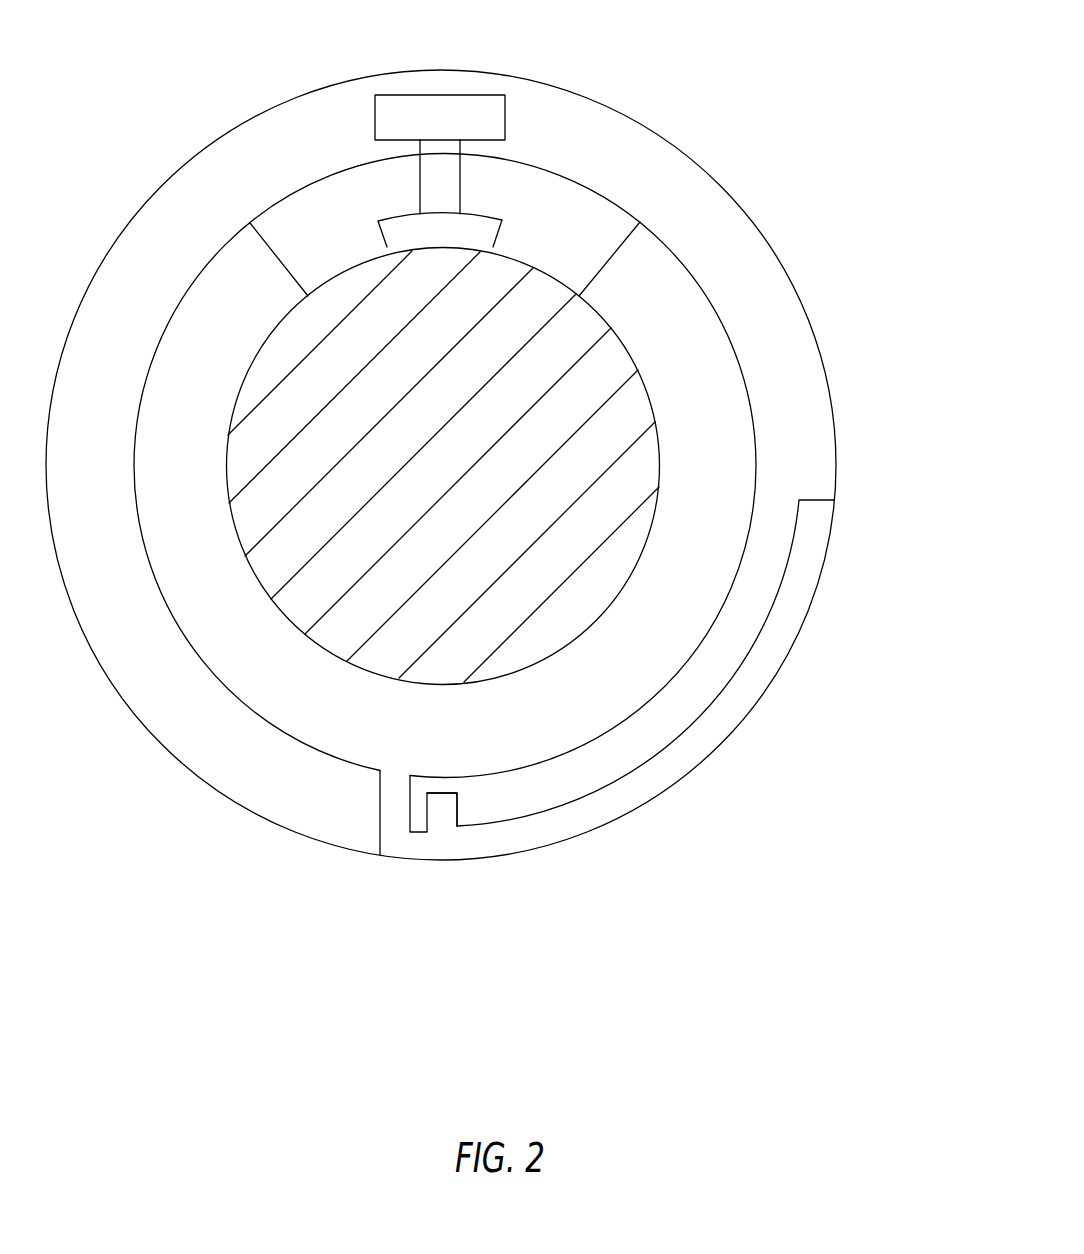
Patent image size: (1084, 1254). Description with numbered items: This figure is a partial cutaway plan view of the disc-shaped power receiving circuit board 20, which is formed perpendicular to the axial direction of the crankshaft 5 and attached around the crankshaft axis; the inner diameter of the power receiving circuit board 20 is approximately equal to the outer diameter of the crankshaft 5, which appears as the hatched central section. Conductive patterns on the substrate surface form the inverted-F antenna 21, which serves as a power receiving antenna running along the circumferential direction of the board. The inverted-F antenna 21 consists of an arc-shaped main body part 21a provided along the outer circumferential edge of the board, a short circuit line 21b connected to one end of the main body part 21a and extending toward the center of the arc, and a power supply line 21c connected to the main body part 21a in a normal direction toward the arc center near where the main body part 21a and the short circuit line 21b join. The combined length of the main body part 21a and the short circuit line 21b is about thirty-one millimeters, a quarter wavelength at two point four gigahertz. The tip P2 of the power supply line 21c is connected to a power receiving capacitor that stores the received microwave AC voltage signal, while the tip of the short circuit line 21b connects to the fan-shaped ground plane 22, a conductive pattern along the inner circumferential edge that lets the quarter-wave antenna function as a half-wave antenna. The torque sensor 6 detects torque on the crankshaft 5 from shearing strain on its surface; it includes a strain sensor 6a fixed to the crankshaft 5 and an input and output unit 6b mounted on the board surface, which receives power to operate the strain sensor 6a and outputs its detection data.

The power receiving circuit board 20 is at (740, 208).
The ground plane 22 is at (687, 567).
The crankshaft 5 is at (490, 417).
The torque sensor 6 is at (556, 128).
The strain sensor 6a is at (460, 235).
The input and output unit 6b is at (460, 122).
The inverted-F antenna 21 is at (579, 775).
The main body part 21a is at (645, 741).
The short circuit line 21b is at (393, 820).
The power supply line 21c is at (443, 817).
The tip of the power supply line P2 is at (445, 800).